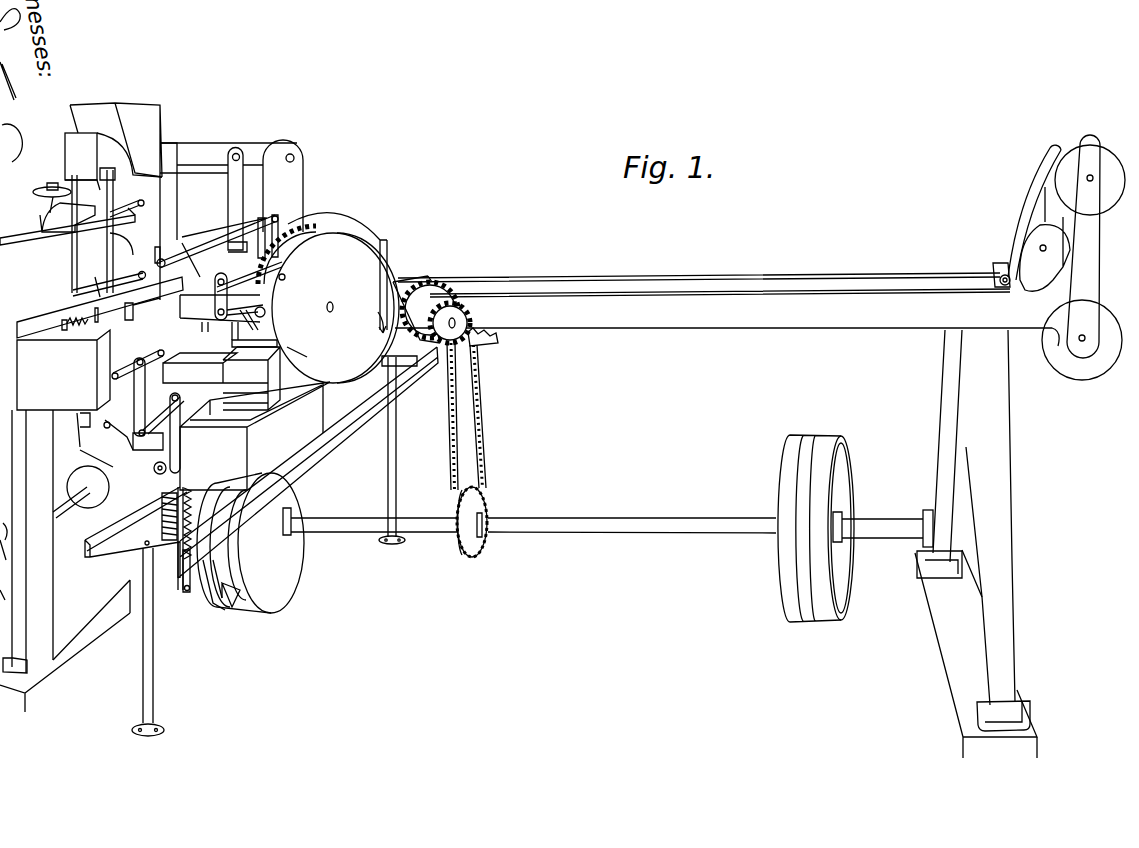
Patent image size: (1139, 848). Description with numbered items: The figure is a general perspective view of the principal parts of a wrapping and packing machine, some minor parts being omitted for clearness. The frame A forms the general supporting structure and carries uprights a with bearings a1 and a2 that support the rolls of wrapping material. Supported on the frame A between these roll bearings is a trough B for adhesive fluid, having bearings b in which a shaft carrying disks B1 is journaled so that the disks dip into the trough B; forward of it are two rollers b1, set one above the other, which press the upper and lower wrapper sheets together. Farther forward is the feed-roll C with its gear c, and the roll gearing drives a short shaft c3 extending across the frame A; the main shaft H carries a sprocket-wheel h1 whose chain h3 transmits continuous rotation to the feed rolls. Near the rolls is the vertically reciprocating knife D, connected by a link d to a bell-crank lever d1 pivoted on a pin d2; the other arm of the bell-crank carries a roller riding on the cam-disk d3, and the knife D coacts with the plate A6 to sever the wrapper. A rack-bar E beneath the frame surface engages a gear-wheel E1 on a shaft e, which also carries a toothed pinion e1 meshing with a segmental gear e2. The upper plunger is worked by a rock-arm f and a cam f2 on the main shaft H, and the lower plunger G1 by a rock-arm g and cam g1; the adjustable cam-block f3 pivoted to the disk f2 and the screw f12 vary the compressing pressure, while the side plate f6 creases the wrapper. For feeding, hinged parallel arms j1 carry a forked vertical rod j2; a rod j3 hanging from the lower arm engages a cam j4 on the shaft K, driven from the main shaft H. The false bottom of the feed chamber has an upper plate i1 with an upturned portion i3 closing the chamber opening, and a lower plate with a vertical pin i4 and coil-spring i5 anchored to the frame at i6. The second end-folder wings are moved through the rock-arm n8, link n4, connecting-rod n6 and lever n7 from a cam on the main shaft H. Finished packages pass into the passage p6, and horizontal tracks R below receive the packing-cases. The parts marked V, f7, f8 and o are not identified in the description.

The hopper V is at (113, 161).
The rack-bar E is at (168, 191).
The rock-arm f is at (228, 158).
The side plate f6 is at (156, 247).
The slide plate f7 is at (215, 243).
The link f8 is at (262, 225).
The hinged parallel arms j1 is at (140, 208).
The vertical rod j2 is at (102, 230).
The coil-spring i5 is at (71, 309).
The vertical pin i4 is at (104, 311).
The upwardly-bent portion i3 is at (138, 304).
The upper plate i1 is at (85, 330).
The stationary portion of the frame i6 is at (100, 319).
The gear c is at (287, 255).
The feed-roll C is at (337, 271).
The knife D is at (251, 277).
The link connection d is at (215, 287).
The plate A6 is at (220, 317).
The bell-crank lever d1 is at (241, 323).
The pin d2 is at (265, 310).
The short shaft c3 is at (334, 307).
The cam-disk d3 is at (319, 355).
The segmental gear e2 is at (430, 310).
The shaft e is at (450, 323).
The toothed pinion e1 is at (453, 329).
The gear-wheel E1 is at (491, 340).
The chain h3 is at (474, 416).
The sprocket-wheel h1 is at (472, 522).
The main shaft H is at (578, 523).
The frame A is at (853, 319).
The uprights a is at (1052, 152).
The bearing a1 is at (1090, 180).
The bearing a2 is at (1082, 340).
The disks B1 is at (1028, 230).
The rollers b1 is at (997, 267).
The bearings b is at (1040, 242).
The trough B is at (1045, 239).
The rock-arm n8 is at (138, 375).
The link o is at (140, 397).
The link n4 is at (187, 393).
The passage p6 is at (221, 375).
The downwardly-extending rod j3 is at (97, 440).
The lower plunger G1 is at (148, 441).
The connecting-rod n6 is at (177, 437).
The rock-arm g is at (166, 465).
The cam j4 is at (88, 487).
The shaft K is at (71, 507).
The horizontal tracks R is at (261, 462).
The lever n7 is at (197, 523).
The cam f2 is at (250, 543).
The adjustable cam-block f3 is at (213, 585).
The screw f12 is at (220, 593).
The cam g1 is at (227, 605).